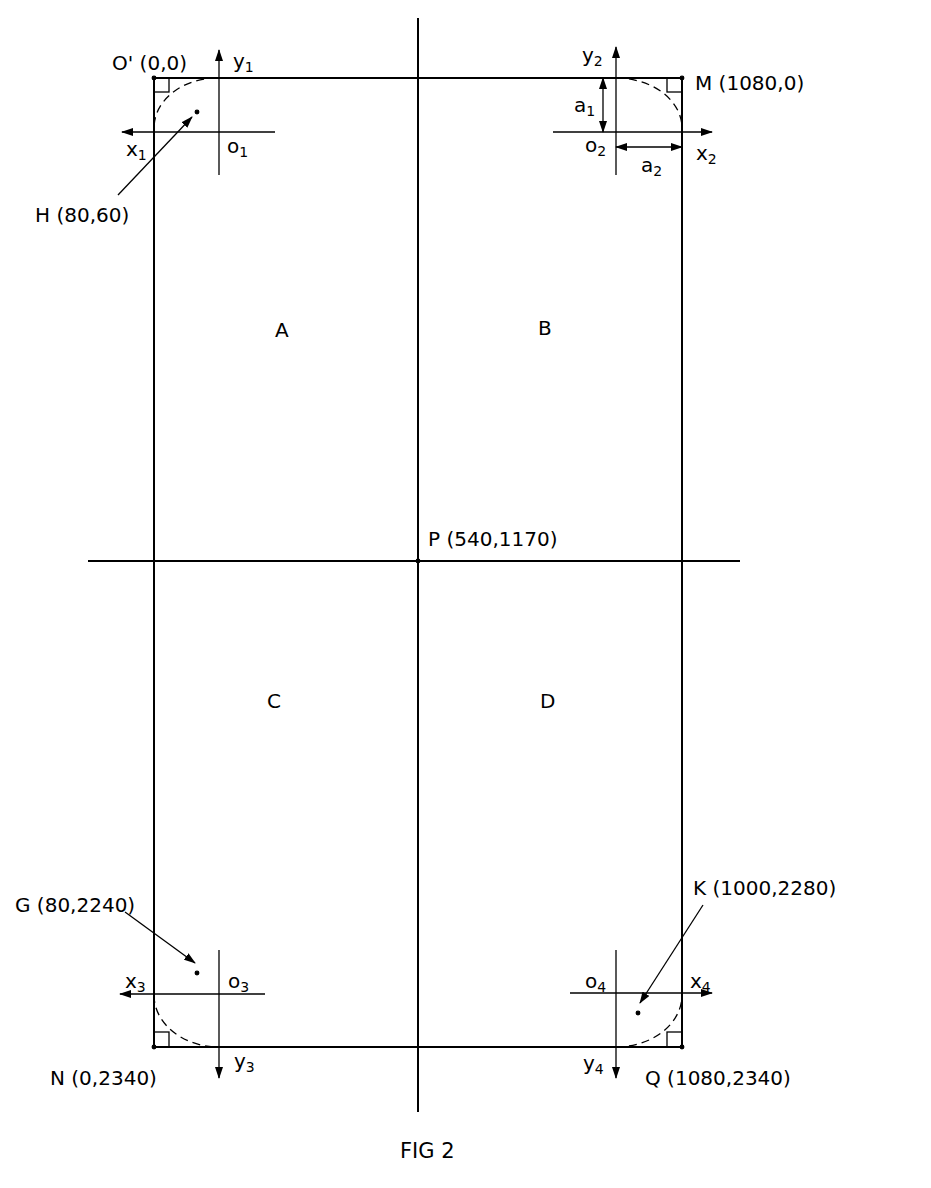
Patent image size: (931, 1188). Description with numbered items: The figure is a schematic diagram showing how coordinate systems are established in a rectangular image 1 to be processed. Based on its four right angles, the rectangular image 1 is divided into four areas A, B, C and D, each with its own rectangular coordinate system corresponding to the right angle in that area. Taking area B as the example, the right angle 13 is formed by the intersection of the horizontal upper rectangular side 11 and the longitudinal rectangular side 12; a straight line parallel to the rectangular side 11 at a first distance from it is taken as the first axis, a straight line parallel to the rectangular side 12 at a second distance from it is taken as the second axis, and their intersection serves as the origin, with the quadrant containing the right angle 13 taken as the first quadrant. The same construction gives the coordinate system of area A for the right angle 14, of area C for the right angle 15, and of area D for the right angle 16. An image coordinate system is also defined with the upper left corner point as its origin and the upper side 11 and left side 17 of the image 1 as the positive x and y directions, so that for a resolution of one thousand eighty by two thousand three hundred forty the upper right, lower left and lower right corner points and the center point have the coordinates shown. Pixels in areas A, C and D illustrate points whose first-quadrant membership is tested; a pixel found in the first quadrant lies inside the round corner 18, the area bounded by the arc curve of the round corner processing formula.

The rectangular image 1 is at (703, 482).
The upper rectangular side 11 is at (290, 77).
The longitudinal rectangular side 12 is at (682, 322).
The right angle 13 is at (676, 95).
The right angle 14 is at (163, 97).
The right angle 15 is at (165, 1030).
The right angle 16 is at (676, 1028).
The left side 17 is at (153, 322).
The round corner 18 is at (155, 1008).